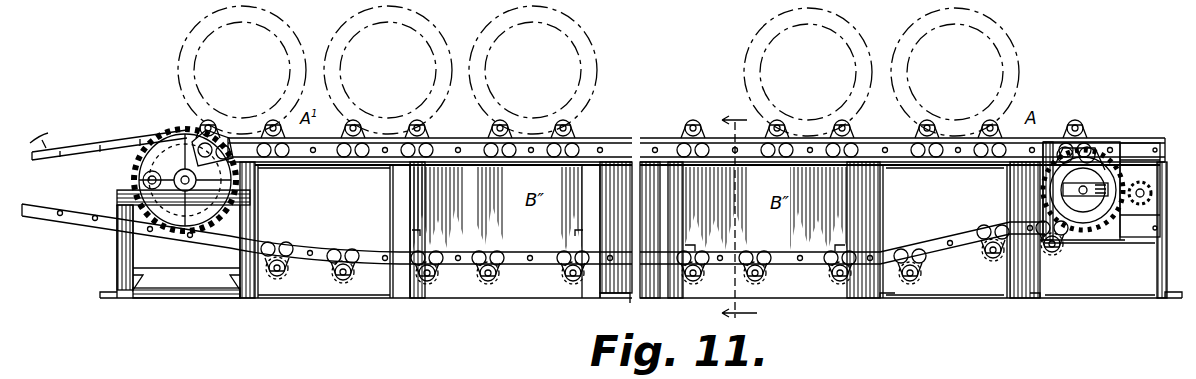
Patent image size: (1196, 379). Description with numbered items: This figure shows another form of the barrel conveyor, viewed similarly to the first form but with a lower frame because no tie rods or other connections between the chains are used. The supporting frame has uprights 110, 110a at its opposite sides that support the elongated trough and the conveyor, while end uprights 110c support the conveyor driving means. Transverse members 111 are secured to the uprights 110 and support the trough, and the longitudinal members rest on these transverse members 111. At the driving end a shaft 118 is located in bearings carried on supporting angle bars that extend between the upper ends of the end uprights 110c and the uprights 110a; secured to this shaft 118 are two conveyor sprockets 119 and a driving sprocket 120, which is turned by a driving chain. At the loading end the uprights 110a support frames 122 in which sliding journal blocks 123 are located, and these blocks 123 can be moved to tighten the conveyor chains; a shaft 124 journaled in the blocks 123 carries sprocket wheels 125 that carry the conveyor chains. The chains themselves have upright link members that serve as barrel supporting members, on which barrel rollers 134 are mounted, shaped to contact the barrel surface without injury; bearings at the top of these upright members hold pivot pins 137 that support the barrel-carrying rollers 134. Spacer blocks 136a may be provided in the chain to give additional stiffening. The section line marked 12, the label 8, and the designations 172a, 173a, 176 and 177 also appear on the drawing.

The feed chute 8 is at (33, 134).
The section line 12 is at (739, 215).
The upright 110 is at (880, 191).
The upright 110a is at (248, 222).
The end upright 110c is at (124, 257).
The transverse member 111 is at (425, 282).
The shaft 118 is at (185, 148).
The conveyor sprocket 119 is at (155, 171).
The driving sprocket 120 is at (180, 146).
The frame 122 is at (1137, 155).
The sliding journal block 123 is at (1095, 183).
The shaft 124 is at (1050, 165).
The sprocket wheel 125 is at (1072, 236).
The barrel roller 134 is at (340, 278).
The spacer block 136a is at (864, 378).
The pivot pin 137 is at (688, 130).
The lower chain track 172a is at (503, 270).
The upper chain track 173a is at (480, 143).
The cross bar 176 is at (124, 200).
The sprocket gear 177 is at (172, 181).